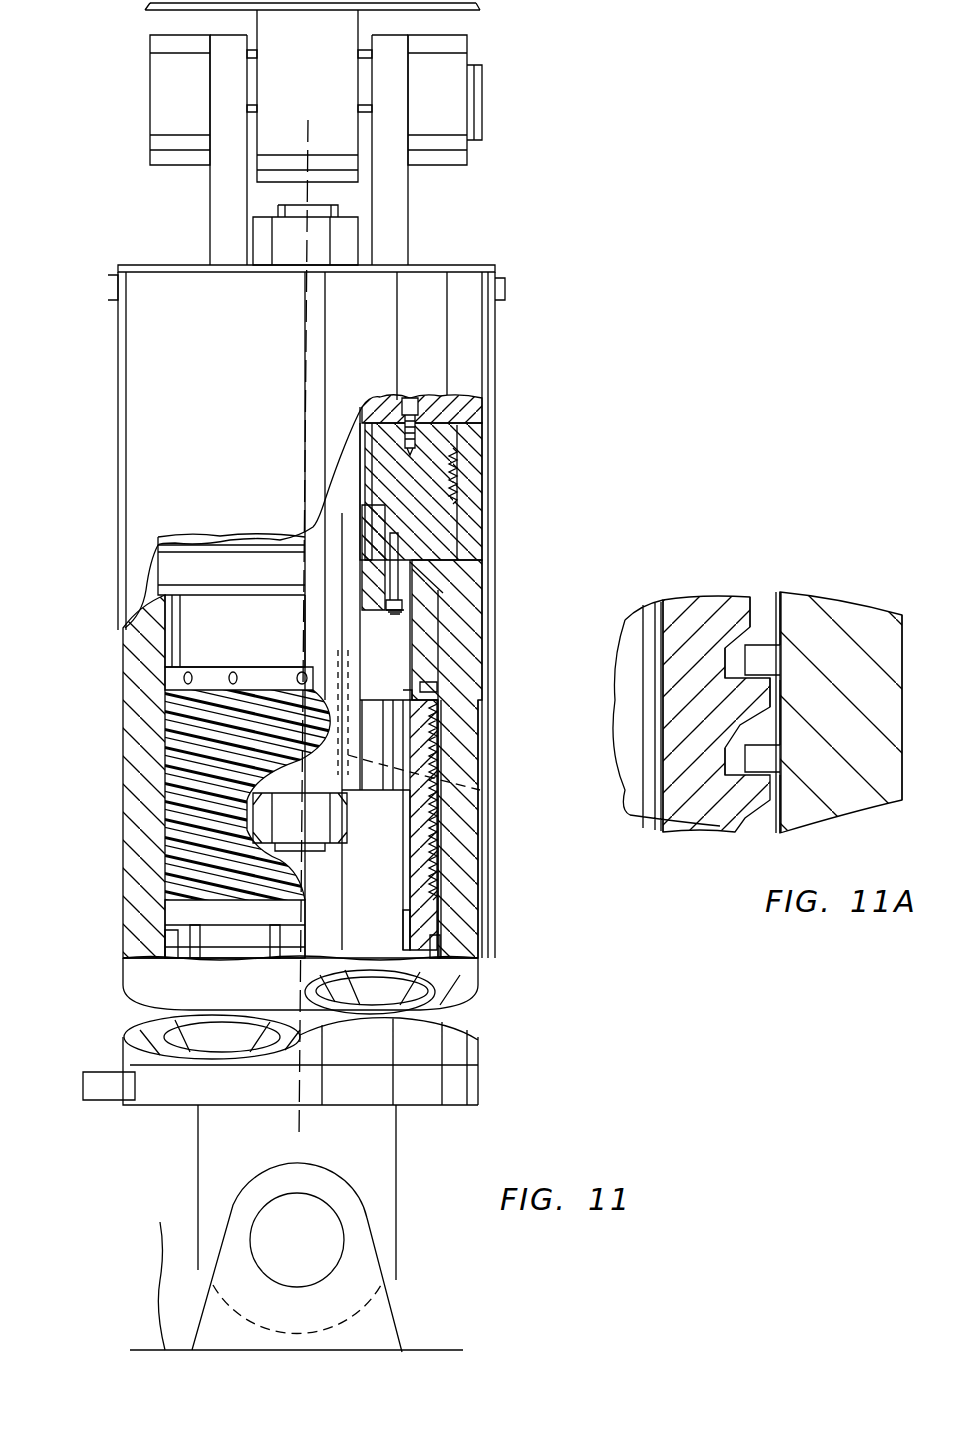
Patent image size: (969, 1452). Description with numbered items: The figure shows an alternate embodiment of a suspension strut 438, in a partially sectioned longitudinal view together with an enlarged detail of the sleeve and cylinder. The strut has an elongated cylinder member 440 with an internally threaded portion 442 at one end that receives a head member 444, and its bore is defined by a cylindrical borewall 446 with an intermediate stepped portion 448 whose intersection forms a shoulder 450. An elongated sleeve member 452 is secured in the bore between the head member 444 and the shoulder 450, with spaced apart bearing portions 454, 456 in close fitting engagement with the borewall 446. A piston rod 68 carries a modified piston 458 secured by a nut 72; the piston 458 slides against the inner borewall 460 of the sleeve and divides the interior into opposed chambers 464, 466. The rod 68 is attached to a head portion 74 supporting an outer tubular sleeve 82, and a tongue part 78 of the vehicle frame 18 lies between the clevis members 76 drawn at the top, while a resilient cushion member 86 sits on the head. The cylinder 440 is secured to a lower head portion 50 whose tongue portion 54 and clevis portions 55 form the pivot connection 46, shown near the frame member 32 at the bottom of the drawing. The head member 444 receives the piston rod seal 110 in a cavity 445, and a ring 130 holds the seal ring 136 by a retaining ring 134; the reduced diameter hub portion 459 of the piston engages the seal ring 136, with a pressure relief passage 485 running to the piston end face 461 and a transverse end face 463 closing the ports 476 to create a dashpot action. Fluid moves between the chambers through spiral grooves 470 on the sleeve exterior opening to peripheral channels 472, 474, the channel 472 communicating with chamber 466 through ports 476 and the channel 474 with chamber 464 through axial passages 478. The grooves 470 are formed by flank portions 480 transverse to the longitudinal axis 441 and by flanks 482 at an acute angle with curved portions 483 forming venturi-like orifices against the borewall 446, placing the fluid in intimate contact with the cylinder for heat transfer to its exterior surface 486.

In FIG. 11, the vehicle frame 18 is at (472, 12).
In FIG. 11, the tongue part 78 is at (298, 104).
In FIG. 11, the upright bracket arms 76 is at (408, 203).
In FIG. 11, the head portion 74 is at (172, 265).
In FIG. 11, the suspension strut 438 is at (100, 396).
In FIG. 11, the longitudinal axis 441 is at (306, 359).
In FIG. 11, the resilient cushion member 86 is at (490, 411).
In FIG. 11, the tubular sleeve member 82 is at (495, 430).
In FIG. 11, the internally threaded portion 442 is at (455, 480).
In FIG. 11, the head member 444 is at (470, 485).
In FIG. 11, the piston rod seal 110 is at (428, 500).
In FIG. 11, the cavity 445 is at (360, 505).
In FIG. 11, the piston rod 68 is at (313, 527).
In FIG. 11, the intermediate stepped portion 448 is at (440, 545).
In FIG. 11, the ring 130 is at (365, 570).
In FIG. 11, the shoulder 450 is at (450, 580).
In FIG. 11, the seal ring 136 is at (360, 595).
In FIG. 11, the retaining ring 134 is at (360, 612).
In FIG. 11, the hub portion 459 is at (302, 652).
In FIG. 11, the ports 476 is at (233, 674).
In FIG. 11, the bearing portion 454 is at (450, 640).
In FIG. 11, the chamber 466 is at (380, 665).
In FIG. 11, the transverse end face 463 is at (407, 688).
In FIG. 11, the peripheral channel 472 is at (180, 678).
In FIG. 11, the pressure relief passage 485 is at (470, 793).
In FIG. 11, the spiral grooves 470 is at (433, 818).
In FIG. 11A, the spiral grooves 470 is at (745, 665).
In FIG. 11, the piston end face 461 is at (385, 800).
In FIG. 11, the piston 458 is at (335, 829).
In FIG. 11A, the piston 458 is at (635, 790).
In FIG. 11, the cylinder member 440 is at (470, 860).
In FIG. 11A, the cylinder member 440 is at (858, 810).
In FIG. 11, the chamber 464 is at (346, 890).
In FIG. 11, the sleeve member 452 is at (430, 905).
In FIG. 11A, the sleeve member 452 is at (712, 822).
In FIG. 11, the nut 72 is at (325, 890).
In FIG. 11, the peripheral channel 474 is at (165, 912).
In FIG. 11, the bearing portion 456 is at (160, 940).
In FIG. 11, the inner borewall 460 is at (440, 920).
In FIG. 11, the passages 478 is at (435, 945).
In FIG. 11, the borewall 446 is at (455, 965).
In FIG. 11A, the borewall 446 is at (765, 820).
In FIG. 11, the head portion 50 is at (478, 1090).
In FIG. 11, the tongue portion 54 is at (398, 1140).
In FIG. 11, the clevis portions 55 is at (245, 1195).
In FIG. 11, the frame 32 is at (160, 1222).
In FIG. 11, the pivot connection 46 is at (330, 1243).
In FIG. 11A, the curved portions 483 is at (788, 598).
In FIG. 11A, the flanks 482 is at (790, 628).
In FIG. 11A, the flank portions 480 is at (745, 678).
In FIG. 11A, the exterior surface 486 is at (900, 790).